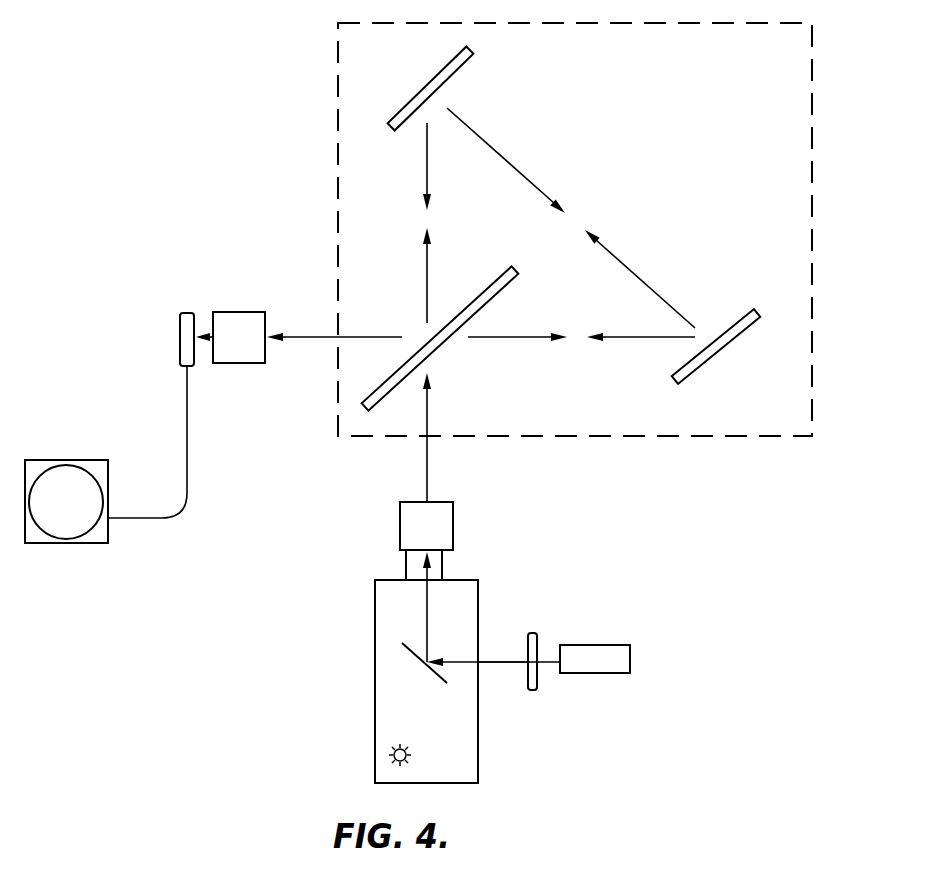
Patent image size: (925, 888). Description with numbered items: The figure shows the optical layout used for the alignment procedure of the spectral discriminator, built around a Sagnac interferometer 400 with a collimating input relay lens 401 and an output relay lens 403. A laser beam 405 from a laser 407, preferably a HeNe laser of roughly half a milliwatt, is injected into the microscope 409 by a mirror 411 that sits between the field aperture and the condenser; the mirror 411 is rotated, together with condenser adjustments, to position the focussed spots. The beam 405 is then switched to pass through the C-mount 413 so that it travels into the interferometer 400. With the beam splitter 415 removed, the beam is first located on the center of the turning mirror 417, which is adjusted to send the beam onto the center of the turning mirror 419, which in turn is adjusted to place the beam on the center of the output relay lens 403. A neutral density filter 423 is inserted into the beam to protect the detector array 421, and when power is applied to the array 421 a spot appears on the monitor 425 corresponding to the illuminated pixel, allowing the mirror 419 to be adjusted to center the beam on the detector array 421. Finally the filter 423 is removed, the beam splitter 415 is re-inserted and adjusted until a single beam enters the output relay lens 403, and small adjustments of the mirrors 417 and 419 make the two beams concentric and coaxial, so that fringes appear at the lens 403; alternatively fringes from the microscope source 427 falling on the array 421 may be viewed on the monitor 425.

The Sagnac interferometer 400 is at (819, 99).
The collimating input relay lens 401 is at (453, 522).
The output relay lens 403 is at (238, 312).
The laser beam 405 is at (503, 662).
The laser 407 is at (605, 645).
The microscope 409 is at (375, 612).
The mirror 411 is at (411, 652).
The C-mount 413 is at (442, 567).
The beam splitter 415 is at (518, 272).
The turning mirror 417 is at (472, 58).
The turning mirror 419 is at (750, 310).
The detector array 421 is at (188, 312).
The neutral density filter 423 is at (533, 633).
The monitor 425 is at (75, 460).
The source 427 is at (392, 757).